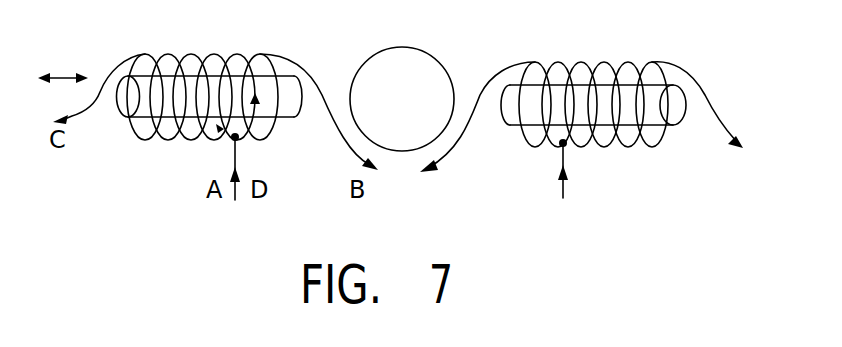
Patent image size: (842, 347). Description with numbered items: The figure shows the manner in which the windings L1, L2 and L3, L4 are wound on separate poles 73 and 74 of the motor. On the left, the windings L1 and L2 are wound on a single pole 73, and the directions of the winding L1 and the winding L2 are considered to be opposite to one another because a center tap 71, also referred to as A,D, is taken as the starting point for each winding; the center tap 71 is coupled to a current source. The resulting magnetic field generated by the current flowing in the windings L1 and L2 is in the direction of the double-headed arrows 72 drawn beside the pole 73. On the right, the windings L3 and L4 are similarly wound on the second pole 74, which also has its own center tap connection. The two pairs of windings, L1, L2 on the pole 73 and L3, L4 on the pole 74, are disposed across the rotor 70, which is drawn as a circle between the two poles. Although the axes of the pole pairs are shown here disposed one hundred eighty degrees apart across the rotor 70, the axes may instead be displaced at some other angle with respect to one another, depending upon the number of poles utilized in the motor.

The rotor 70 is at (397, 47).
The center tap 71 is at (233, 160).
The arrows 72 is at (60, 78).
The pole 73 is at (131, 103).
The pole 74 is at (675, 117).
The winding L1 is at (176, 54).
The winding L2 is at (282, 57).
The winding L3 is at (541, 62).
The winding L4 is at (660, 62).